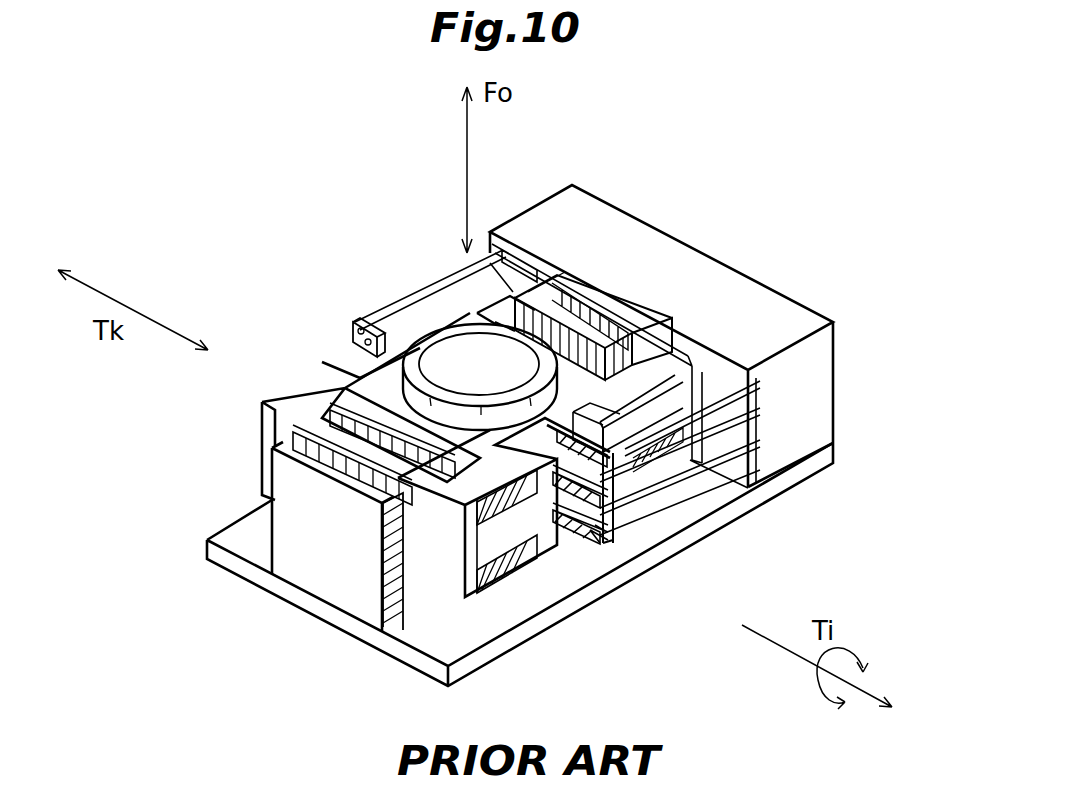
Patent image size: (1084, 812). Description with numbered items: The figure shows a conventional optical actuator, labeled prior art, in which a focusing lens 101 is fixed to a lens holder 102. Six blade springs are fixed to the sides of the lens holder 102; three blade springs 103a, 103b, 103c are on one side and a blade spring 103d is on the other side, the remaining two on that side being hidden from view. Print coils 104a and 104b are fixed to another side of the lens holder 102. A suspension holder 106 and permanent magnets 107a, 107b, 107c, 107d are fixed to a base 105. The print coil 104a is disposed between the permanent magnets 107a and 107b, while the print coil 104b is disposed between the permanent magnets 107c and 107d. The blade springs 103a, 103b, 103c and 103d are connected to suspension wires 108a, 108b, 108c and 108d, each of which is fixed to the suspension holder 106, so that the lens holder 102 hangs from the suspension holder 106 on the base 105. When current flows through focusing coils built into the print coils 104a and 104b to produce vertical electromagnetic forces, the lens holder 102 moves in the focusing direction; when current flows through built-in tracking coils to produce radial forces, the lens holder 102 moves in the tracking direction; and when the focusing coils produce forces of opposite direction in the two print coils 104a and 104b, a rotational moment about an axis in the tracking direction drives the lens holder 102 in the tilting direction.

The focusing lens 101 is at (463, 352).
The lens holder 102 is at (545, 538).
The blade spring 103a is at (617, 490).
The blade spring 103b is at (618, 517).
The blade spring 103c is at (575, 530).
The blade spring 103d is at (350, 332).
The print coil 104a is at (433, 565).
The print coil 104b is at (813, 325).
The base 105 is at (473, 632).
The suspension holder 106 is at (818, 322).
The permanent magnet 107a is at (297, 435).
The permanent magnet 107b is at (338, 418).
The permanent magnet 107c is at (577, 295).
The permanent magnet 107d is at (683, 367).
The suspension wire 108a is at (750, 393).
The suspension wire 108b is at (750, 430).
The suspension wire 108c is at (757, 472).
The suspension wire 108d is at (465, 270).